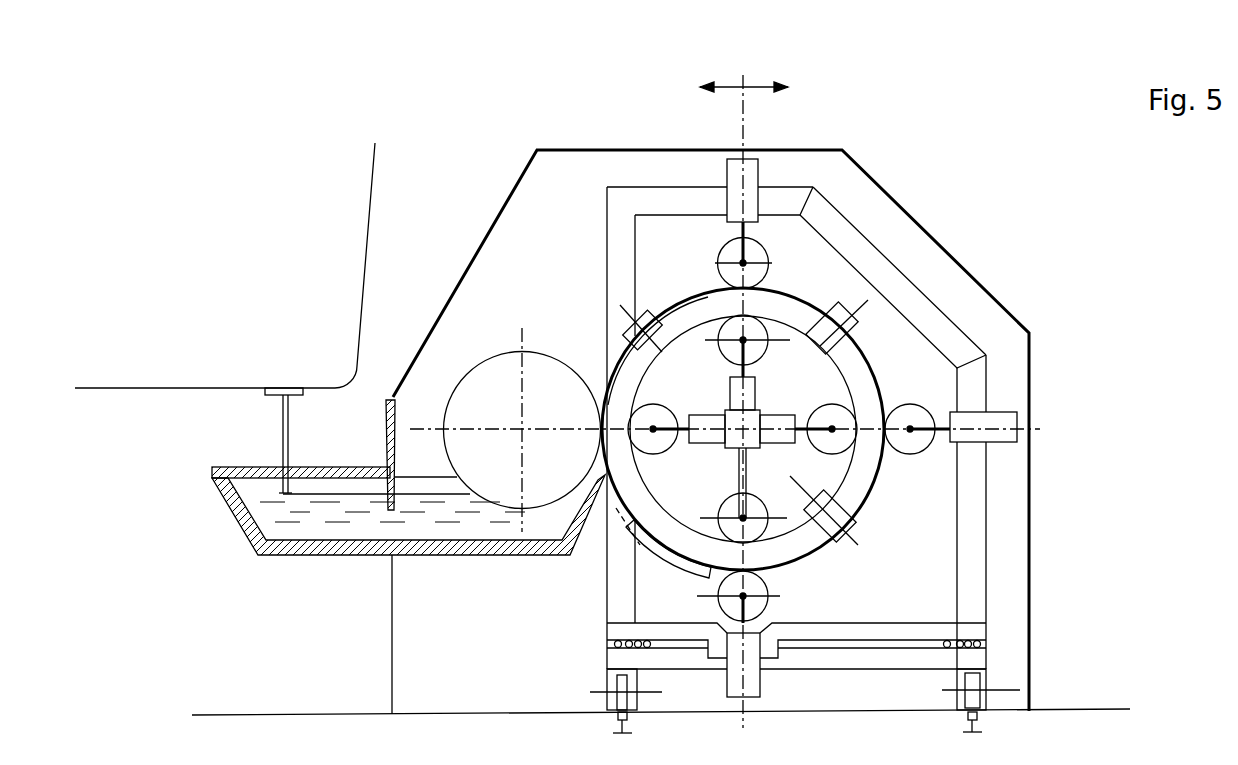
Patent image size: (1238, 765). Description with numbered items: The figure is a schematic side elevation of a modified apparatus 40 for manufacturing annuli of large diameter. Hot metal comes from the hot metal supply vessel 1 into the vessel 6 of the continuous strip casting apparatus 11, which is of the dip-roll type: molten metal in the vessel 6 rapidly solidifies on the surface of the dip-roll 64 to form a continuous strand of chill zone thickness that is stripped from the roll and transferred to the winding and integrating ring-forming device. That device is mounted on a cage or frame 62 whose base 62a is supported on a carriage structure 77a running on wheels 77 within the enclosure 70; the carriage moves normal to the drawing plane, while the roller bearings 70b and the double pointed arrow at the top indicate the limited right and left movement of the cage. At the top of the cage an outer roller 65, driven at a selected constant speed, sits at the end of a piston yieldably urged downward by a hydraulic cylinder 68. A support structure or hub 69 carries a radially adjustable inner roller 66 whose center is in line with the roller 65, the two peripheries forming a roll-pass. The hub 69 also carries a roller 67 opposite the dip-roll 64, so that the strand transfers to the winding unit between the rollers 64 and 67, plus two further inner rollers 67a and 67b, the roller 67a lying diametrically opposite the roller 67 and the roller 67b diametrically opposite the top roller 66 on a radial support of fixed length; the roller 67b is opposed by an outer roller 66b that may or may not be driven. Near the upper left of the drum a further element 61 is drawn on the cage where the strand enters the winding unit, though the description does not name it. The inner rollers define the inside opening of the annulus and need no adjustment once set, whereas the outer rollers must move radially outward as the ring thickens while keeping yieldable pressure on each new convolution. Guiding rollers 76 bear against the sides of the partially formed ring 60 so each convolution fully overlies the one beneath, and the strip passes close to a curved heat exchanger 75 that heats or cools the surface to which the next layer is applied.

The hot metal supply vessel 1 is at (352, 187).
The vessel of the continuous casting apparatus 6 is at (250, 537).
The continuous strip casting apparatus 11 is at (480, 340).
The applicator apparatus housing 40 is at (877, 226).
The partially formed ring 60 is at (865, 352).
The guide roller 61 is at (612, 346).
The cage or frame 62 is at (970, 388).
The base 62a is at (887, 628).
The dip-roll 64 is at (537, 380).
The outer roller 65 is at (758, 252).
The inner roller 66 is at (755, 332).
The outer roller 66b is at (903, 446).
The roller 67 is at (656, 412).
The inner roller 67a is at (852, 450).
The inner roller 67b is at (766, 524).
The hydraulic cylinder 68 is at (752, 159).
The support structure or hub 69 is at (783, 433).
The enclosure 70 is at (992, 297).
The roller bearings 70b is at (610, 646).
The curved heat exchanger 75 is at (683, 567).
The guiding rollers 76 is at (868, 300).
The wheels 77 is at (990, 672).
The carriage structure 77a is at (835, 664).